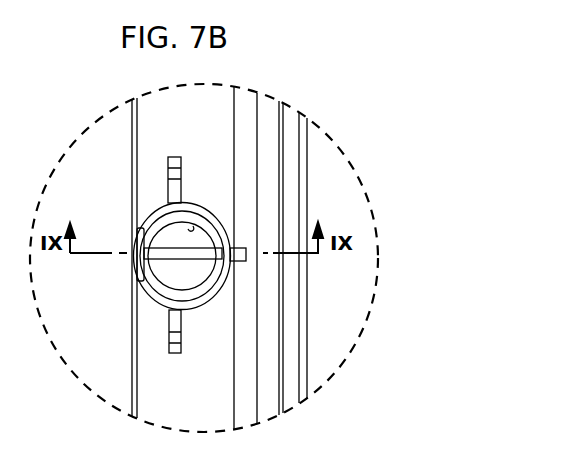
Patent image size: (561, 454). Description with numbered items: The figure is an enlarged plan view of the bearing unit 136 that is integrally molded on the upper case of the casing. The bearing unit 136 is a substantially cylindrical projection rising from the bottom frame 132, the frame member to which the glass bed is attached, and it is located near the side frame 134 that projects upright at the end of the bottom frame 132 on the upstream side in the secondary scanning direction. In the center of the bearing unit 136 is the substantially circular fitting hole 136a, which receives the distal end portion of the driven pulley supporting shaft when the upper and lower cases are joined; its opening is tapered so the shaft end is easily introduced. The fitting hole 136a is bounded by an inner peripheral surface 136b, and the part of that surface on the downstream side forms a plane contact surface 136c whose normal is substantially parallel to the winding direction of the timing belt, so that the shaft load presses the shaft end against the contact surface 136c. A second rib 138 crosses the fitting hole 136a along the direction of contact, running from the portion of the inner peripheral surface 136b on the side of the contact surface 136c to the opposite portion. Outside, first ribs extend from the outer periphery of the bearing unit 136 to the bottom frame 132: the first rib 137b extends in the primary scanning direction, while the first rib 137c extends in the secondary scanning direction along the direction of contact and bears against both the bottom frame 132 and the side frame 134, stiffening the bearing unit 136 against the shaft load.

The bottom frame 132 is at (152, 346).
The side frame 134 is at (247, 177).
The bearing unit 136 is at (156, 209).
The fitting hole 136a is at (187, 277).
The inner peripheral surface 136b is at (188, 226).
The contact surface 136c is at (140, 283).
The first rib 137b is at (171, 321).
The first rib 137c is at (172, 188).
The second rib 138 is at (178, 264).